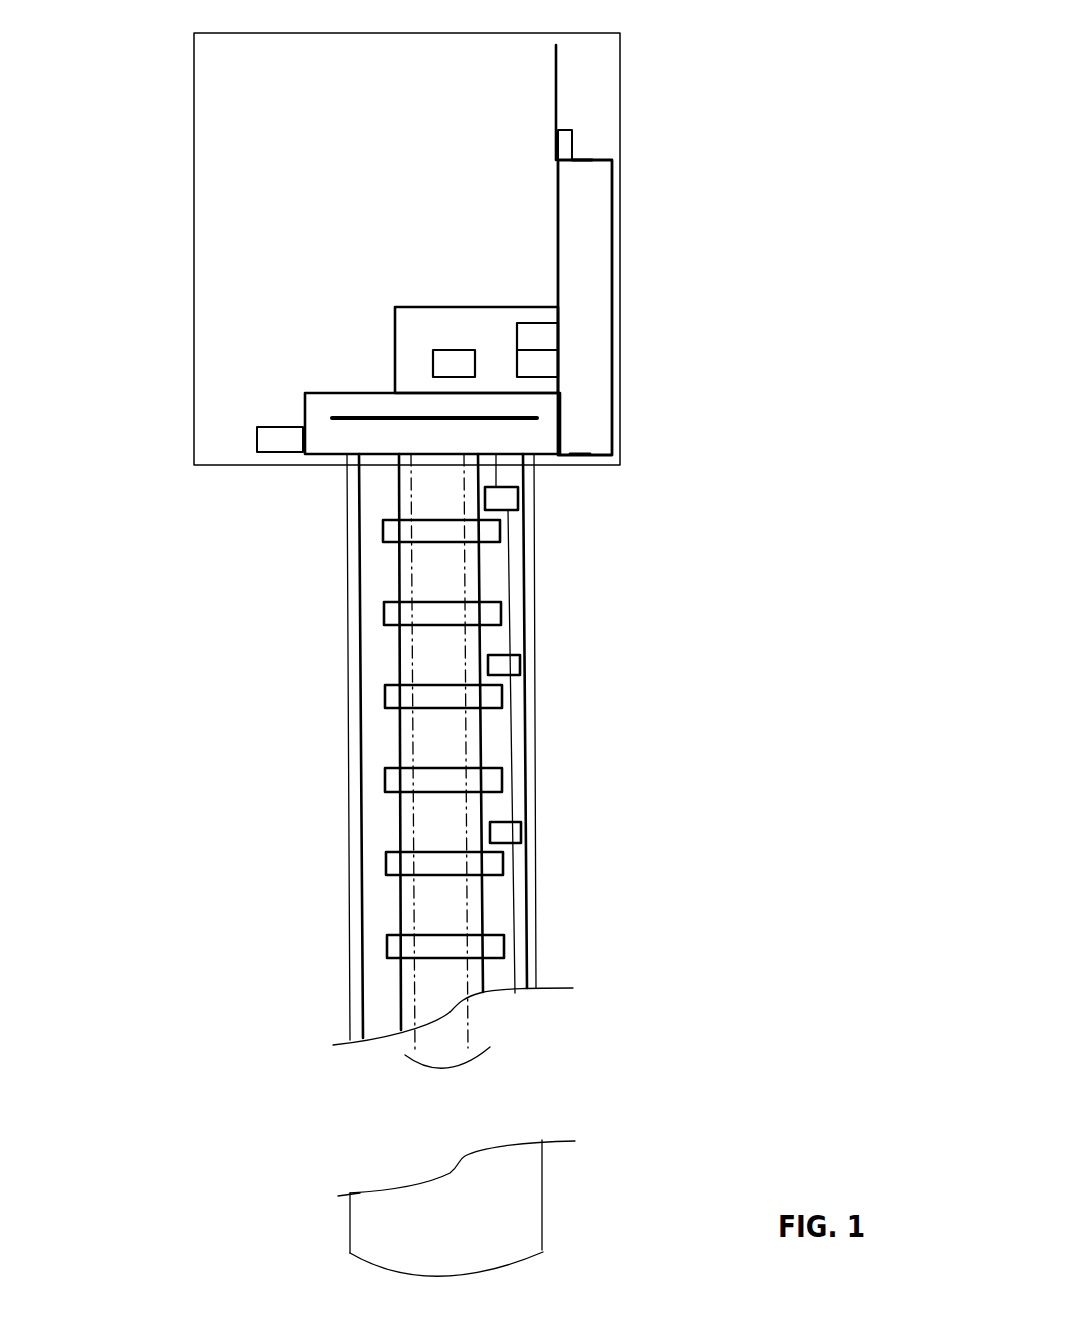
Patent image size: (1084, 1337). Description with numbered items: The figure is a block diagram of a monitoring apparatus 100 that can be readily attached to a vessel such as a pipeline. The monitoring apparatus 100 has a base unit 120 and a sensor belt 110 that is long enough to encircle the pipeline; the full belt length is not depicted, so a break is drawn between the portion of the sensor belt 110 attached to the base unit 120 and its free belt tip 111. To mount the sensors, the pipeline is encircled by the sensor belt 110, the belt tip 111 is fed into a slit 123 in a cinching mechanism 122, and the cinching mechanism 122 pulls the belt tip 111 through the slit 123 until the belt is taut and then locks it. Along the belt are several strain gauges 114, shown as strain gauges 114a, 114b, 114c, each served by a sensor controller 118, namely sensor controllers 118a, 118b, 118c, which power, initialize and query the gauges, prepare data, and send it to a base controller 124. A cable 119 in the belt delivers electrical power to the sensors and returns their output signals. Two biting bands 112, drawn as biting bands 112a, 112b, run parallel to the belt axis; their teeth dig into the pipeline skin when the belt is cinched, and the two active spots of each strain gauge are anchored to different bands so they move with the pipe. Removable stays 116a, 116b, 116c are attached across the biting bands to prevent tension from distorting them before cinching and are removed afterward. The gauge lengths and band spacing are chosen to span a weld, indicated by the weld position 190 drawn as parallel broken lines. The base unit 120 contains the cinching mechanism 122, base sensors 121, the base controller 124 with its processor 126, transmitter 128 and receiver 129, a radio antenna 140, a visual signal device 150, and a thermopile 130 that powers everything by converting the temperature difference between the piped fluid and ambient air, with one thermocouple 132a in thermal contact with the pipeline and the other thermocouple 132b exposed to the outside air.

The monitoring apparatus 100 is at (240, 1120).
The sensor belt 110 is at (535, 485).
The belt tip 111 is at (522, 1218).
The biting bands 112 is at (545, 1021).
The biting band 112a is at (380, 1003).
The biting band 112b is at (497, 983).
The strain gauges 114 is at (293, 743).
The strain gauge 114a is at (397, 536).
The strain gauge 114b is at (394, 700).
The strain gauge 114c is at (396, 866).
The removable stay 116a is at (394, 617).
The removable stay 116b is at (396, 783).
The removable stay 116c is at (398, 950).
The sensor controller 118 is at (700, 682).
The sensor controller 118a is at (512, 497).
The sensor controller 118b is at (512, 665).
The sensor controller 118c is at (604, 824).
The cable 119 is at (515, 900).
The base unit 120 is at (233, 77).
The base sensors 121 is at (268, 443).
The cinching mechanism 122 is at (305, 422).
The slit 123 is at (332, 418).
The base controller 124 is at (410, 328).
The processor 126 is at (443, 362).
The transmitter 128 is at (535, 333).
The receiver 129 is at (520, 360).
The thermopile 130 is at (595, 197).
The thermocouple 132a is at (578, 452).
The thermocouple 132b is at (590, 158).
The radio antenna 140 is at (558, 43).
The visual signal device 150 is at (558, 138).
The weld position 190 is at (445, 1068).